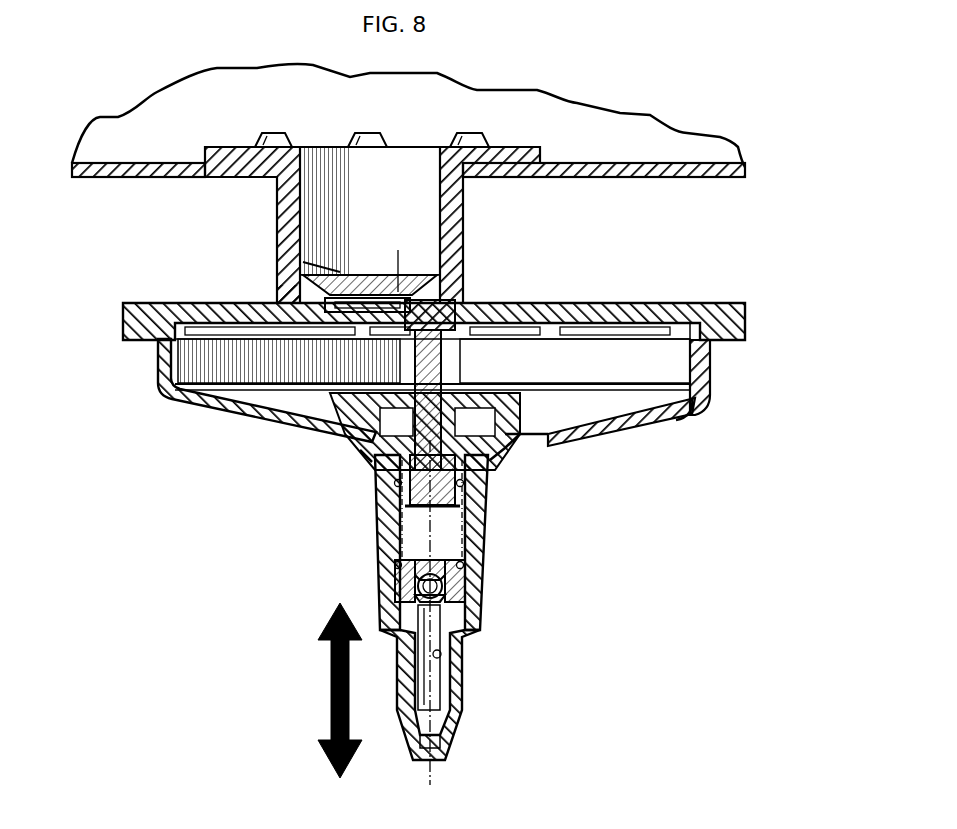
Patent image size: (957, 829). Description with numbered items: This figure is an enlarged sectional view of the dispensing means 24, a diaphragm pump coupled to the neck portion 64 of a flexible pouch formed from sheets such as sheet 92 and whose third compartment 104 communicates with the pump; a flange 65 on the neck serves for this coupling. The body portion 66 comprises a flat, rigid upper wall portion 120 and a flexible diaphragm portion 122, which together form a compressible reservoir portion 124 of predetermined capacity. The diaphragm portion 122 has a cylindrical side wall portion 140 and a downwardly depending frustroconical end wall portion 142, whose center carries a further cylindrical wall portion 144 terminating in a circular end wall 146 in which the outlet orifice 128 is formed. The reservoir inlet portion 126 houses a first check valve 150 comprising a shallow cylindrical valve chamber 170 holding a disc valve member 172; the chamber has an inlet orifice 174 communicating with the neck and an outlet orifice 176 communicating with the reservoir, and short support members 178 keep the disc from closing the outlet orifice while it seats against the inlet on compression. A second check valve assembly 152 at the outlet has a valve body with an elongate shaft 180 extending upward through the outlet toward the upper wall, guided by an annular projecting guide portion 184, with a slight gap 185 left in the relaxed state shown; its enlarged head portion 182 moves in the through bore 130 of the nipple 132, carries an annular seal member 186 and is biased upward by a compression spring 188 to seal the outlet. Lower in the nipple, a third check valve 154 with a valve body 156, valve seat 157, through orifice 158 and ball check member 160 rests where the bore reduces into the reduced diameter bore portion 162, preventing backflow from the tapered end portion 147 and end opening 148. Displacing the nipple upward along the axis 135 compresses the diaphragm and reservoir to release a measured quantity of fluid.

The third compartment 104 is at (220, 110).
The flexible sheet 92 is at (736, 178).
The neck portion 64 is at (466, 190).
The flange 65 is at (512, 147).
The disc valve member 172 is at (370, 211).
The inlet orifice 174 is at (362, 292).
The valve chamber 170 is at (398, 258).
The inlet portion 126 is at (335, 266).
The first check valve 150 is at (292, 292).
The support members 178 is at (368, 314).
The upper wall portion 120 is at (608, 303).
The body portion 66 is at (735, 298).
The cylindrical side wall portion 140 is at (712, 352).
The frustroconical end wall portion 142 is at (680, 412).
The reservoir portion 124 is at (626, 386).
The diaphragm portion 122 is at (192, 396).
The outlet orifice 176 is at (289, 361).
The annular projecting guide portion 184 is at (468, 352).
The gap 185 is at (458, 312).
The elongate shaft 180 is at (432, 395).
The outlet orifice 128 is at (448, 440).
The second check valve assembly 152 is at (320, 432).
The cylindrical wall portion 144 is at (365, 446).
The circular end wall 146 is at (372, 474).
The through bore 130 is at (482, 506).
The nipple 132 is at (482, 605).
The enlarged head portion 182 is at (402, 508).
The seal member 186 is at (400, 470).
The compression spring 188 is at (466, 483).
The through orifice 158 is at (482, 550).
The valve seat 157 is at (393, 580).
The valve body 156 is at (480, 585).
The third check valve 154 is at (410, 572).
The ball check member 160 is at (332, 618).
The dispensing means 24 is at (253, 575).
The reduced diameter bore portion 162 is at (442, 652).
The tapered end portion 147 is at (462, 720).
The end opening 148 is at (442, 760).
The axis 135 is at (428, 775).